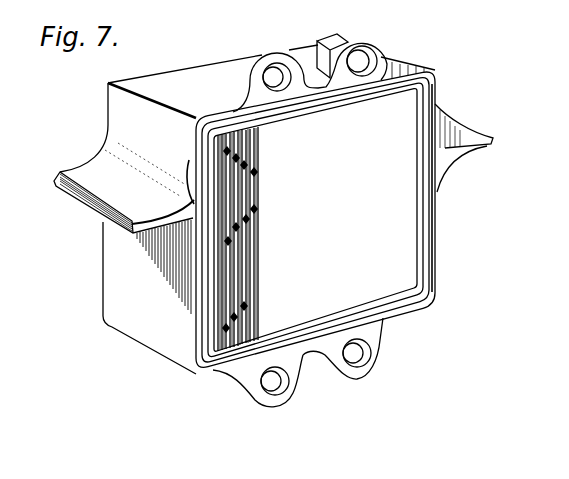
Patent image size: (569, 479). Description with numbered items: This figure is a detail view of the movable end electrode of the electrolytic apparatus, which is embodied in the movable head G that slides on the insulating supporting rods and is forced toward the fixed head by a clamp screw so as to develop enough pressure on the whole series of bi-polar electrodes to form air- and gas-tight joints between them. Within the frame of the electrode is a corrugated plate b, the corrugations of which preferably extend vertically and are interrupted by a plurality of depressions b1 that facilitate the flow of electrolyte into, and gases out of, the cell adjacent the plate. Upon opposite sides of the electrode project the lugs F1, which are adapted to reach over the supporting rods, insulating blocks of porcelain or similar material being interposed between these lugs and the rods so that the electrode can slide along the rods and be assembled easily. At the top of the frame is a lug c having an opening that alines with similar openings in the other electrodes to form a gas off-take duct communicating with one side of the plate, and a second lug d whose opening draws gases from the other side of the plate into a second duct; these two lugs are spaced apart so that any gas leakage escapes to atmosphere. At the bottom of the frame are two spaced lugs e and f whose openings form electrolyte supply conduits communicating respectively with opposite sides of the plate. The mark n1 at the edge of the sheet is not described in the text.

The movable head G is at (123, 264).
The corrugated plate b is at (227, 292).
The depressions b1 is at (256, 257).
The lugs F1 is at (510, 158).
The lug c is at (200, 92).
The second lug d is at (360, 36).
The lug e is at (262, 398).
The lug f is at (352, 377).
The adjacent figure part n1 is at (543, 10).